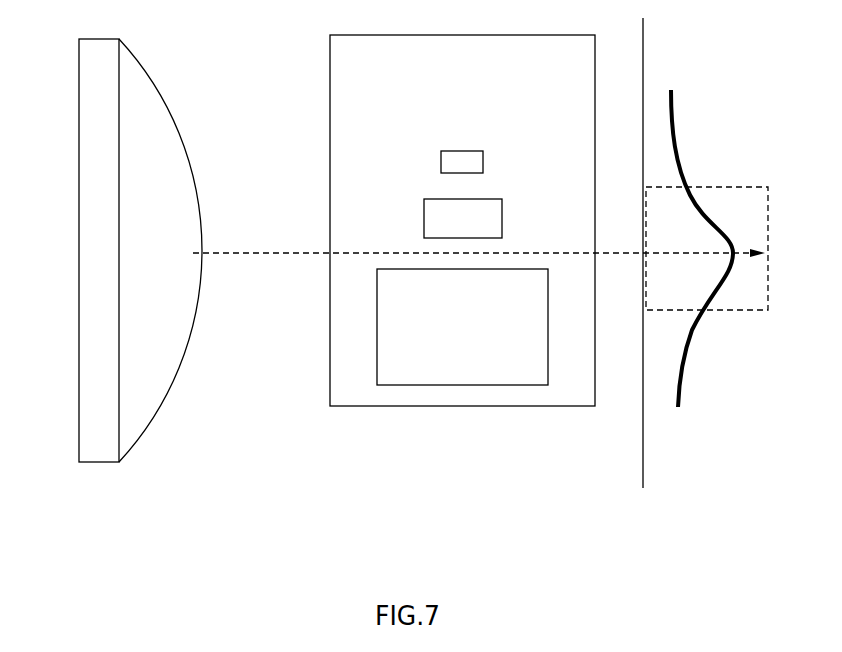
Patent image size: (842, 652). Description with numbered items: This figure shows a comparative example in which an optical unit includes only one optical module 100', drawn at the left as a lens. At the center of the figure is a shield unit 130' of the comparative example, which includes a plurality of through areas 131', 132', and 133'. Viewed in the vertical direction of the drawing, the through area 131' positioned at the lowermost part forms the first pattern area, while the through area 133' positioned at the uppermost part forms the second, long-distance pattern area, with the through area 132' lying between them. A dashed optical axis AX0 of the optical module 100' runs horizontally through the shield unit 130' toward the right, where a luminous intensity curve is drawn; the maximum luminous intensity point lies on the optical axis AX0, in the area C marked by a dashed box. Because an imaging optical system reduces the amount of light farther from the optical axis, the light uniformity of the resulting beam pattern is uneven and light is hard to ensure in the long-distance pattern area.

The optical module 100' is at (107, 250).
The shield unit 130' is at (464, 252).
The through area 131' is at (462, 359).
The through area 132' is at (505, 218).
The through area 133' is at (504, 161).
The area C is at (745, 187).
The optical axis AX0 is at (500, 254).